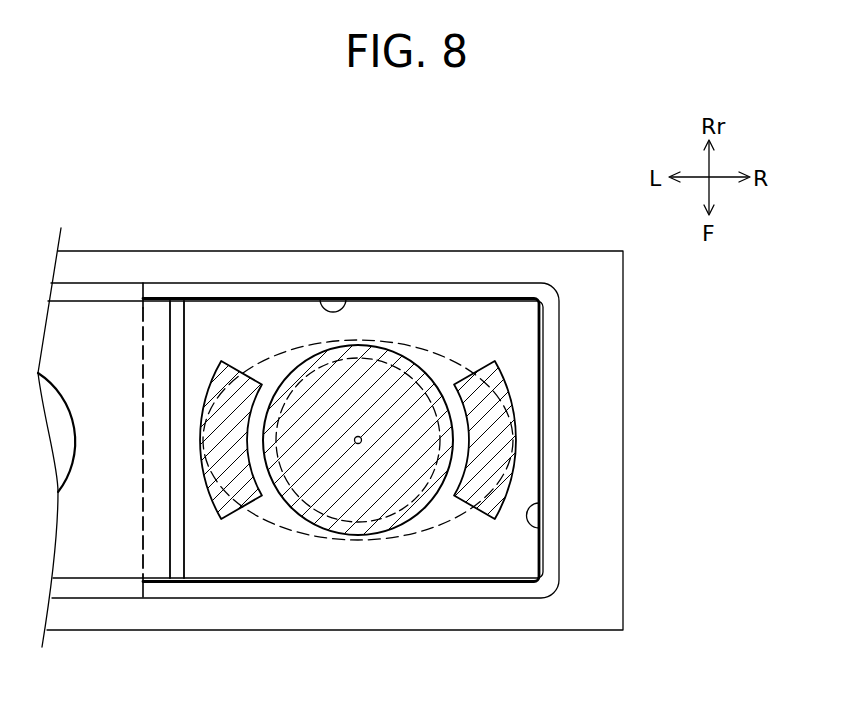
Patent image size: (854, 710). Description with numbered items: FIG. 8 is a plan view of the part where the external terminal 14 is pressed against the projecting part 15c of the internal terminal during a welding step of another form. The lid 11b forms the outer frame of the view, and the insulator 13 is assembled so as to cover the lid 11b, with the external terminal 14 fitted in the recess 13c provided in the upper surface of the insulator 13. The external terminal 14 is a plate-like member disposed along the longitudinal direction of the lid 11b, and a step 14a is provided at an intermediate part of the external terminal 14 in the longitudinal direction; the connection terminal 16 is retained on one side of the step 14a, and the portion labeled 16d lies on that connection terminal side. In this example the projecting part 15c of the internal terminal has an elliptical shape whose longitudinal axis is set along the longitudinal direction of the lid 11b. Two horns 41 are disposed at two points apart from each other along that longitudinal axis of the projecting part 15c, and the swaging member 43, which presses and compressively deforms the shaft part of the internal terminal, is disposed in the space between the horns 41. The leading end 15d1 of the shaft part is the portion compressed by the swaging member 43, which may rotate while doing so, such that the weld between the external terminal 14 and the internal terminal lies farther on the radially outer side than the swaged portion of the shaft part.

The lid 11b is at (623, 378).
The insulator 13 is at (510, 283).
The recess 13c is at (320, 299).
The external terminal 14 is at (243, 300).
The step 14a is at (183, 353).
The projecting part 15c is at (443, 358).
The leading end 15d1 is at (404, 360).
The connection terminal 16 is at (77, 481).
The lens flange 16d is at (63, 398).
The horn 41 is at (222, 518).
The swaging member 43 is at (432, 528).